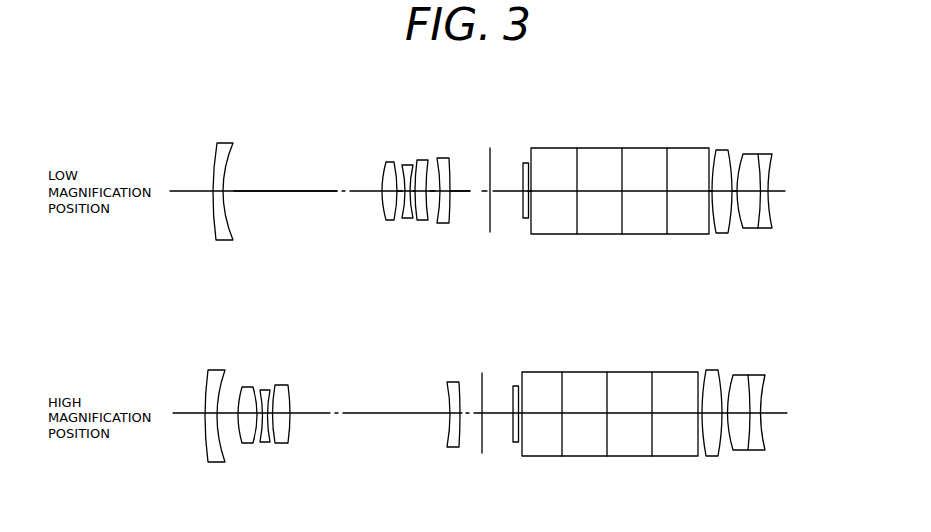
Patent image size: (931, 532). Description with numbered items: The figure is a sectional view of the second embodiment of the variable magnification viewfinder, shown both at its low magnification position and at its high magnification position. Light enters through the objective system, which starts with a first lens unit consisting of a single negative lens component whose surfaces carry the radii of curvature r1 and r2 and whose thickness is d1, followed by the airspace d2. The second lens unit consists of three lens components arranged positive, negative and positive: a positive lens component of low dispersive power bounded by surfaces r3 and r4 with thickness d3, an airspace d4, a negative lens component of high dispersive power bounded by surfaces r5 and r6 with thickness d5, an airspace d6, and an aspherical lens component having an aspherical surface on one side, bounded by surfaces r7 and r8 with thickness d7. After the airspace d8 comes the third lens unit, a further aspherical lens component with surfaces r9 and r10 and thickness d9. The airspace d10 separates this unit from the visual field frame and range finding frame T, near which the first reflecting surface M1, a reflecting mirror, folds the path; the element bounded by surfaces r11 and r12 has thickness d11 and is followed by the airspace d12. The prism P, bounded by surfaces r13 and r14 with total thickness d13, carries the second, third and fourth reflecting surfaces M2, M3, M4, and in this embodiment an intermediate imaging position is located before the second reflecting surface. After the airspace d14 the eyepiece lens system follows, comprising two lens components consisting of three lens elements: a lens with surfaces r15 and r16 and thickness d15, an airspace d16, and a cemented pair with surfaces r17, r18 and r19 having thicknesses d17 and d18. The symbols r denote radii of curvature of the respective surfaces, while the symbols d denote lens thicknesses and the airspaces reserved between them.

The thickness d1 is at (226, 195).
The airspace d2 is at (266, 190).
The thickness d3 is at (364, 202).
The airspace d4 is at (393, 178).
The thickness d5 is at (396, 188).
The airspace d6 is at (411, 180).
The thickness d7 is at (434, 197).
The airspace d8 is at (431, 182).
The thickness d9 is at (463, 199).
The airspace d10 is at (470, 183).
The thickness d11 is at (531, 192).
The airspace d12 is at (531, 185).
The thickness d13 is at (620, 180).
The airspace d14 is at (710, 190).
The thickness d15 is at (714, 197).
The airspace d16 is at (735, 190).
The thickness d17 is at (758, 202).
The thickness d18 is at (784, 193).
The radius of curvature r1 is at (228, 204).
The radius of curvature r2 is at (230, 216).
The radius of curvature r3 is at (371, 212).
The radius of curvature r4 is at (396, 214).
The radius of curvature r5 is at (403, 220).
The radius of curvature r6 is at (403, 218).
The radius of curvature r7 is at (435, 225).
The radius of curvature r8 is at (417, 220).
The radius of curvature r9 is at (463, 226).
The radius of curvature r10 is at (450, 218).
The radius of curvature r11 is at (531, 230).
The radius of curvature r12 is at (529, 218).
The radius of curvature r13 is at (620, 180).
The radius of curvature r14 is at (620, 176).
The radius of curvature r15 is at (714, 224).
The radius of curvature r16 is at (731, 228).
The radius of curvature r17 is at (755, 231).
The radius of curvature r18 is at (758, 226).
The radius of curvature r19 is at (772, 215).
The first reflecting surface M1 is at (505, 173).
The second reflecting surface M2 is at (578, 160).
The third reflecting surface M3 is at (623, 158).
The fourth reflecting surface M4 is at (666, 158).
The visual field frame and range finding frame T is at (498, 202).
The prism P is at (620, 180).